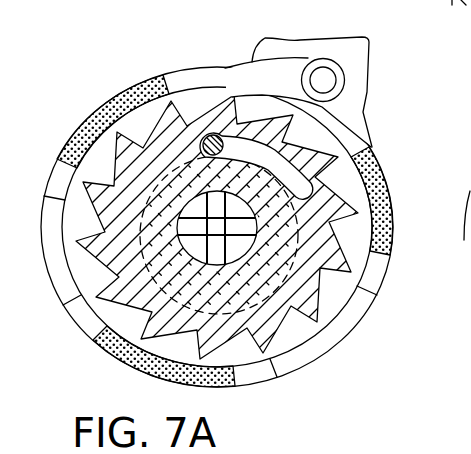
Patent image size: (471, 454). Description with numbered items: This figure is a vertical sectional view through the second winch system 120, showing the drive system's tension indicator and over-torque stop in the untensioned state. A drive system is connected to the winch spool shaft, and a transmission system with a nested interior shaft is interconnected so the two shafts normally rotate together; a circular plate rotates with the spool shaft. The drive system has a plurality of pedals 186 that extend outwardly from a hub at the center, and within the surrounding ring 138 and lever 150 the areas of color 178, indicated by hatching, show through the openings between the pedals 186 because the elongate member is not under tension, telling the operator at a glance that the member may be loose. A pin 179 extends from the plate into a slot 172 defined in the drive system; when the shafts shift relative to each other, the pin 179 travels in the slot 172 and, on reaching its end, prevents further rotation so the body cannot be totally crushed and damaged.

The ratchet wheel assembly 120 is at (93, 79).
The ring 138 is at (320, 298).
The lever 150 is at (242, 80).
The slot 172 is at (293, 162).
The areas of color 178 is at (375, 173).
The pin 179 is at (203, 140).
The pedals 186 is at (302, 353).